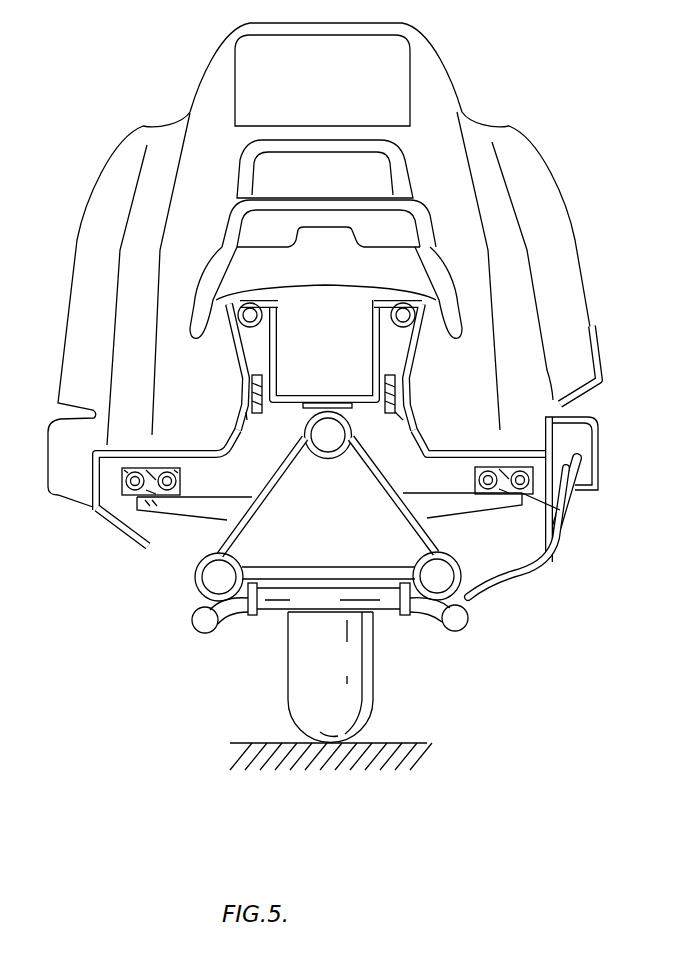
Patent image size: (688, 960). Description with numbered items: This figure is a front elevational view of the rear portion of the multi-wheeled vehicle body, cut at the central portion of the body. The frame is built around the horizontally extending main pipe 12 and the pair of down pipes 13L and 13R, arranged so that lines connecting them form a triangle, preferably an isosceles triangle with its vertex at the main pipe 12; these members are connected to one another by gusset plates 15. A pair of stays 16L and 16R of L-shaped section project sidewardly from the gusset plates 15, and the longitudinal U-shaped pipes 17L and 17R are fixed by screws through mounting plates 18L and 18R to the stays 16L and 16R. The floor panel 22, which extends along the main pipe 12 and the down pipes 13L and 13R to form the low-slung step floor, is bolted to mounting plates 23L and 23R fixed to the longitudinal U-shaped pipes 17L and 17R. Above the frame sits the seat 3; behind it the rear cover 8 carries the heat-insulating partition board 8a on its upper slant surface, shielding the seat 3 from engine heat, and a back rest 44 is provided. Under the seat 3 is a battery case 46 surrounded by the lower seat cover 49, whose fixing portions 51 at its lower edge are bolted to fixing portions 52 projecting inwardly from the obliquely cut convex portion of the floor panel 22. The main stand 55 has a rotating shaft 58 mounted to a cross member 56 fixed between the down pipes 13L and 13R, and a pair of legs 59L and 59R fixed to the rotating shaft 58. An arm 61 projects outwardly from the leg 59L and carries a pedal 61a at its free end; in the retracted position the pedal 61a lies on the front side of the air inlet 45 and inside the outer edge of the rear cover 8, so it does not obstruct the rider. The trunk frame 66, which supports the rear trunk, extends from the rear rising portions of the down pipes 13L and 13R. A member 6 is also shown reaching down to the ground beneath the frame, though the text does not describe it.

The seat 3 is at (200, 225).
The rear cover 8 is at (568, 205).
The partition board 8a is at (600, 378).
The back rest 44 is at (392, 58).
The battery case 46 is at (280, 352).
The trunk frame 66 is at (232, 337).
The lower seat cover 49 is at (415, 347).
The fixing portion 51 is at (245, 397).
The fixing portion 52 is at (248, 415).
The floor panel 22 is at (223, 443).
The mounting plate 23R is at (92, 507).
The mounting plate 23L is at (565, 494).
The air inlet 45 is at (582, 440).
The pedal 61a is at (590, 462).
The arm 61 is at (553, 563).
The mounting plate 18R is at (127, 495).
The mounting plate 18L is at (570, 533).
The longitudinal U-shaped pipe 17R is at (180, 480).
The longitudinal U-shaped pipe 17L is at (475, 478).
The stay 16R is at (173, 508).
The stay 16L is at (468, 503).
The main pipe 12 is at (327, 460).
The gusset plate 15 is at (256, 503).
The down pipe 13R is at (196, 590).
The down pipe 13L is at (477, 595).
The cross member 56 is at (328, 572).
The main stand 55 is at (387, 617).
The leg 59R is at (227, 628).
The leg 59L is at (450, 633).
The rotating shaft 58 is at (288, 623).
The ground-engaging cylinder 6 is at (288, 708).